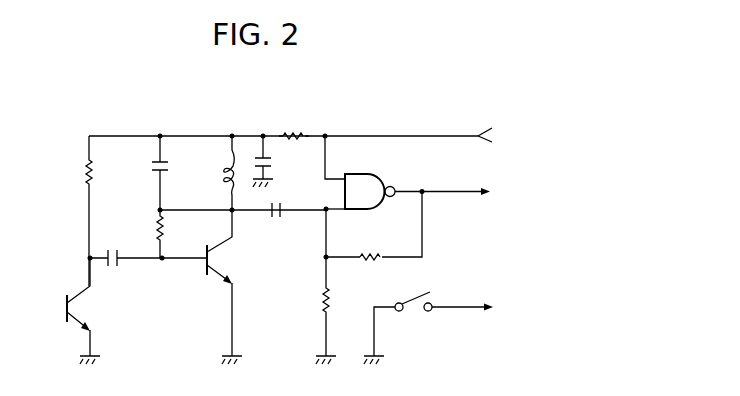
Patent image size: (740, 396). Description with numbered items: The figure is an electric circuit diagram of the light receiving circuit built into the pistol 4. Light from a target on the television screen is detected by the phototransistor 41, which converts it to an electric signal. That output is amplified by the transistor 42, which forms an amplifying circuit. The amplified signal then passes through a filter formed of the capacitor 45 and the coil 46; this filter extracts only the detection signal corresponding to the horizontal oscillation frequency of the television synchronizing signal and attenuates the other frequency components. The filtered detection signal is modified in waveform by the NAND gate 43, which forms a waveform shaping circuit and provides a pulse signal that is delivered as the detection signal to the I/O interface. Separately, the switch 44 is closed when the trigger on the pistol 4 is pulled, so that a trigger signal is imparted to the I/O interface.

The pistol 4 is at (430, 113).
The phototransistor 41 is at (66, 304).
The transistor 42 is at (206, 270).
The NAND gate 43 is at (367, 177).
The switch 44 is at (415, 293).
The capacitor 45 is at (171, 162).
The coil 46 is at (225, 170).